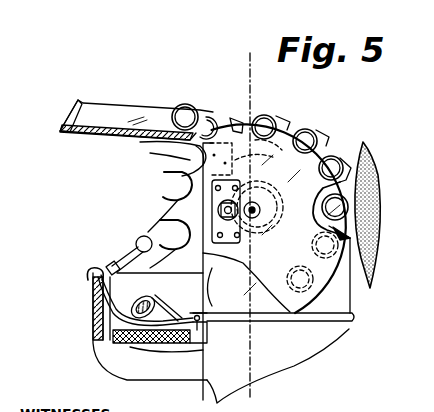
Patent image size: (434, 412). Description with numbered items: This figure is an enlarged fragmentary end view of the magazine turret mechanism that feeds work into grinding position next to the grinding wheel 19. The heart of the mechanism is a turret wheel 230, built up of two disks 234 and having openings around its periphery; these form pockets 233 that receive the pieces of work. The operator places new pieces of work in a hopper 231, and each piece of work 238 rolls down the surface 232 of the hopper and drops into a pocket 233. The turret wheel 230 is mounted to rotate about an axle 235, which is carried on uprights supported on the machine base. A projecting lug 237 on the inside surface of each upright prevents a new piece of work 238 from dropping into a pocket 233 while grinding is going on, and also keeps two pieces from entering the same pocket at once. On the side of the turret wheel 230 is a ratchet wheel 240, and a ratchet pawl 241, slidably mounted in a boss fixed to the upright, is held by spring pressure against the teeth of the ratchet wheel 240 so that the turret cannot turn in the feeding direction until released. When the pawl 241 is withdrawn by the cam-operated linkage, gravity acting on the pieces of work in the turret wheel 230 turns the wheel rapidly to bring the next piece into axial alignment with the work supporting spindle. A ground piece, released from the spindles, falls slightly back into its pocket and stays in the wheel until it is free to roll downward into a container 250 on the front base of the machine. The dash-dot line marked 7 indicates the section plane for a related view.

The section line 7- 7 is at (228, 50).
The grinding wheel 19 is at (375, 194).
The turret wheel 230 is at (225, 211).
The hopper 231 is at (112, 115).
The surface 232 is at (73, 118).
The pockets 233 is at (186, 192).
The disks 234 is at (283, 123).
The axle 235 is at (256, 230).
The projecting lug 237 is at (203, 156).
The piece of work 238 is at (208, 112).
The ratchet wheel 240 is at (324, 180).
The ratchet pawl 241 is at (176, 222).
The container 250 is at (120, 320).